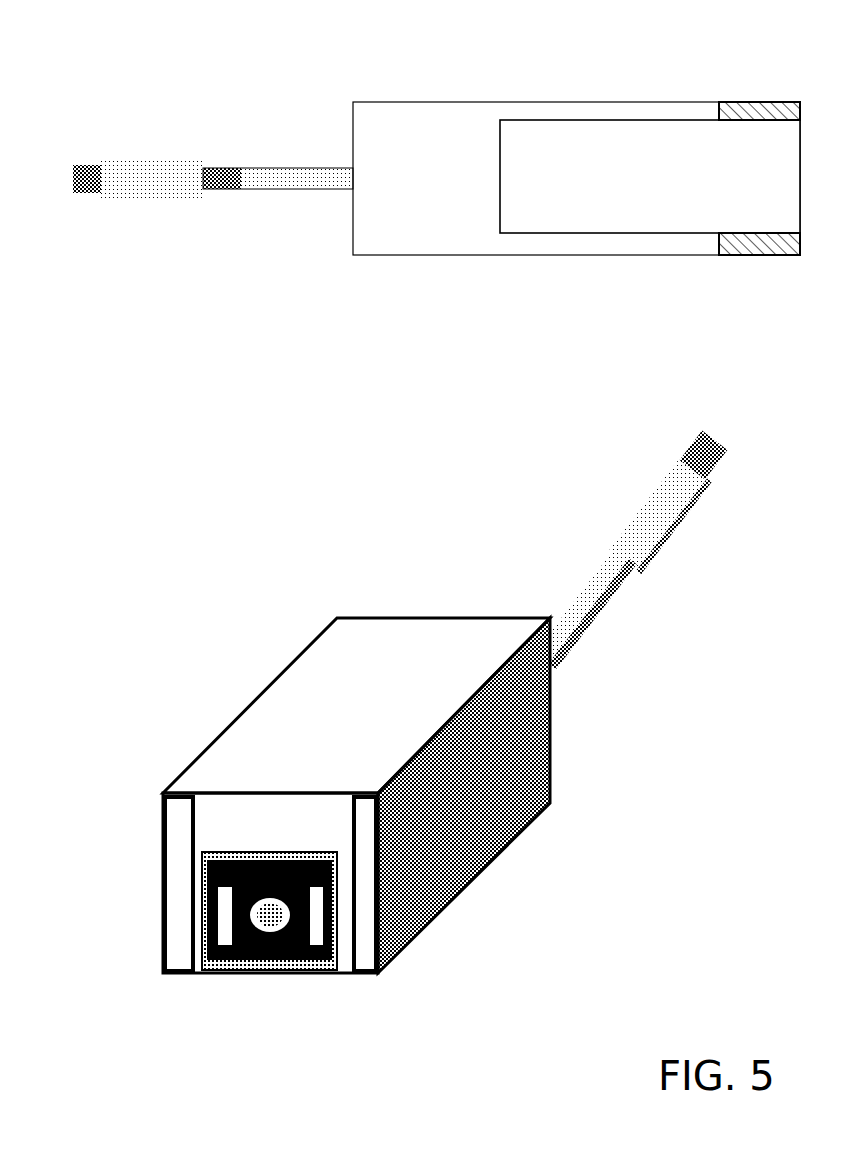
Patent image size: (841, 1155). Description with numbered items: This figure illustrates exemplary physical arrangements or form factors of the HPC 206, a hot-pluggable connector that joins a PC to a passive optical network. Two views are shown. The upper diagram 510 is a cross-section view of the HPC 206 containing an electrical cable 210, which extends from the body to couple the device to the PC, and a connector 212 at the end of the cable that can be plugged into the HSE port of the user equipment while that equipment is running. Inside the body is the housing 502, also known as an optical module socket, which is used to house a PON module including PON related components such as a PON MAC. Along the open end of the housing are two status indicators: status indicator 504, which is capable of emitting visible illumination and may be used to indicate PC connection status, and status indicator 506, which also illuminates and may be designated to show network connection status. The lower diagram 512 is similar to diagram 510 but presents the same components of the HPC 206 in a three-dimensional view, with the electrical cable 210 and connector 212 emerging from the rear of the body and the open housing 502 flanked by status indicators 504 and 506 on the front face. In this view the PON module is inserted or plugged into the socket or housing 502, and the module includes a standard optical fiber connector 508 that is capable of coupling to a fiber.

The HPC 206 is at (460, 268).
The electrical cable 210 is at (288, 190).
The connector 212 is at (73, 176).
The housing 502 is at (583, 197).
The status indicator 504 is at (765, 257).
The status indicator 506 is at (751, 101).
The standard optical fiber connector 508 is at (312, 962).
The diagram 510 is at (272, 43).
The diagram 512 is at (341, 567).